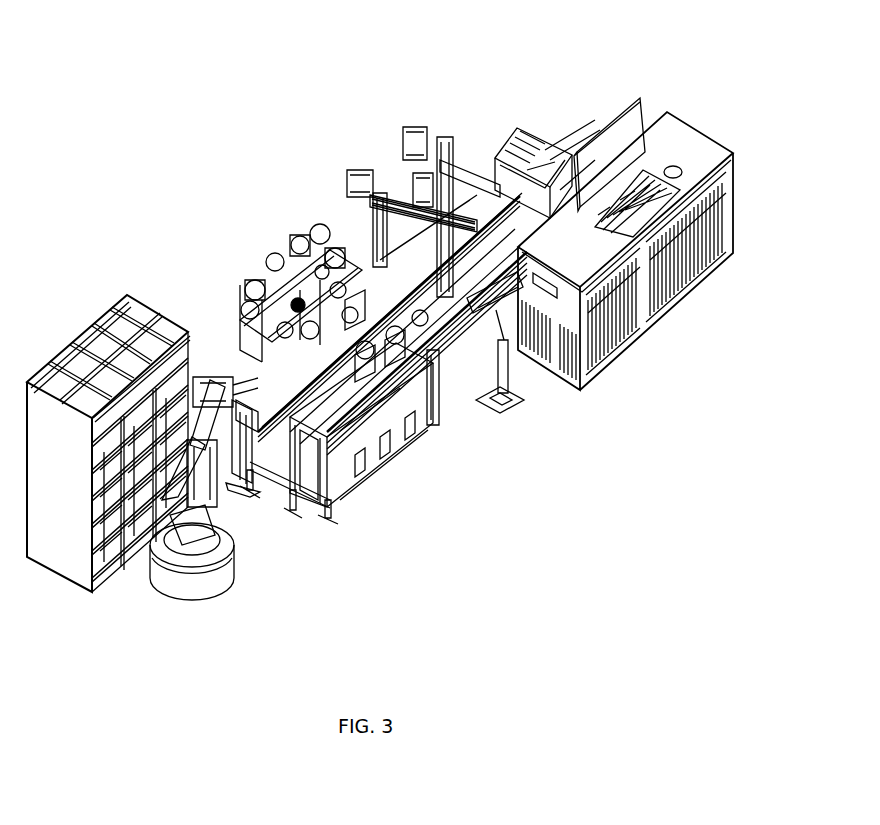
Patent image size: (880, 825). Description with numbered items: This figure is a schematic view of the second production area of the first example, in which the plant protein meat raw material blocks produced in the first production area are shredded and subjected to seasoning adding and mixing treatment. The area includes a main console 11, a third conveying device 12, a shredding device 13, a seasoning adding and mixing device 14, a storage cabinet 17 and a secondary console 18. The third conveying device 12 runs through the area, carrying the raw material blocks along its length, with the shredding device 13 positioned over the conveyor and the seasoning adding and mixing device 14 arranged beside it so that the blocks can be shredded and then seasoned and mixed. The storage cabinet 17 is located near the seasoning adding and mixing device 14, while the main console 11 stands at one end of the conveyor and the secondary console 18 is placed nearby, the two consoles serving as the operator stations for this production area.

The main console 11 is at (670, 140).
The third conveying device 12 is at (540, 147).
The shredding device 13 is at (383, 177).
The seasoning adding and mixing device 14 is at (272, 258).
The storage cabinet 17 is at (355, 453).
The secondary console 18 is at (485, 385).